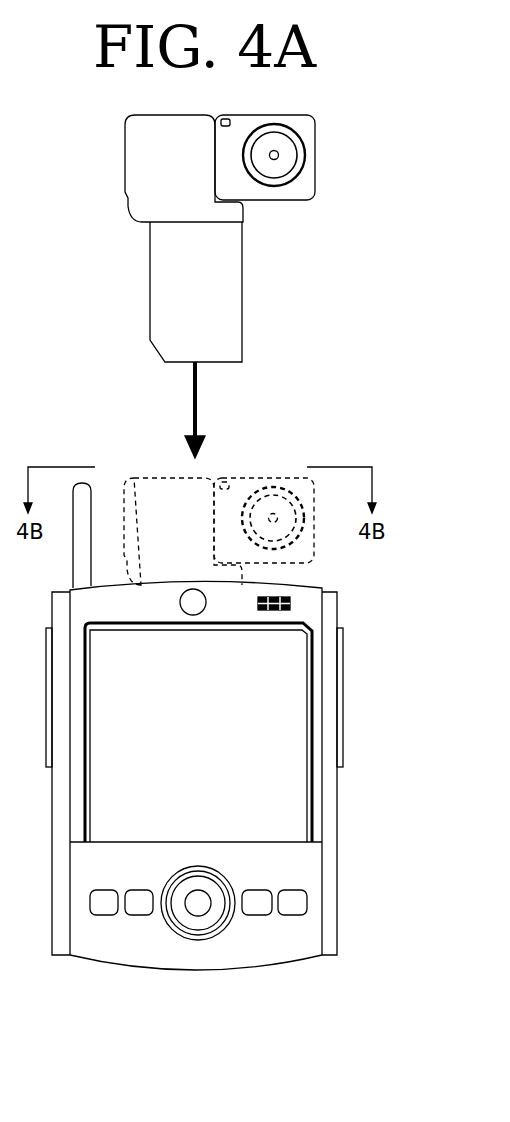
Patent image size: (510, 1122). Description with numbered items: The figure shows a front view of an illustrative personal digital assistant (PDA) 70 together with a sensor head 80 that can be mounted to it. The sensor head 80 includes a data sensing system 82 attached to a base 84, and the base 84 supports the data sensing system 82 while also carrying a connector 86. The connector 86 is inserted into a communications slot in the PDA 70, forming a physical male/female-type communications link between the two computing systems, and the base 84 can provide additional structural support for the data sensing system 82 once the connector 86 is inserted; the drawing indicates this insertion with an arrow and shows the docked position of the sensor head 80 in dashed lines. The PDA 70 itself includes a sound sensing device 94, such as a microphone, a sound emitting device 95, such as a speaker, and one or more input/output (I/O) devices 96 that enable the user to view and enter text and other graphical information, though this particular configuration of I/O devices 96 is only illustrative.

The personal digital assistant (PDA) 70 is at (225, 752).
The sensor head 80 is at (245, 238).
The data sensing system 82 is at (317, 155).
The base 84 is at (182, 173).
The connector 86 is at (212, 303).
The sound sensing device 94 is at (290, 604).
The sound emitting device 95 is at (203, 598).
The input/output (I/O) devices 96 is at (293, 951).